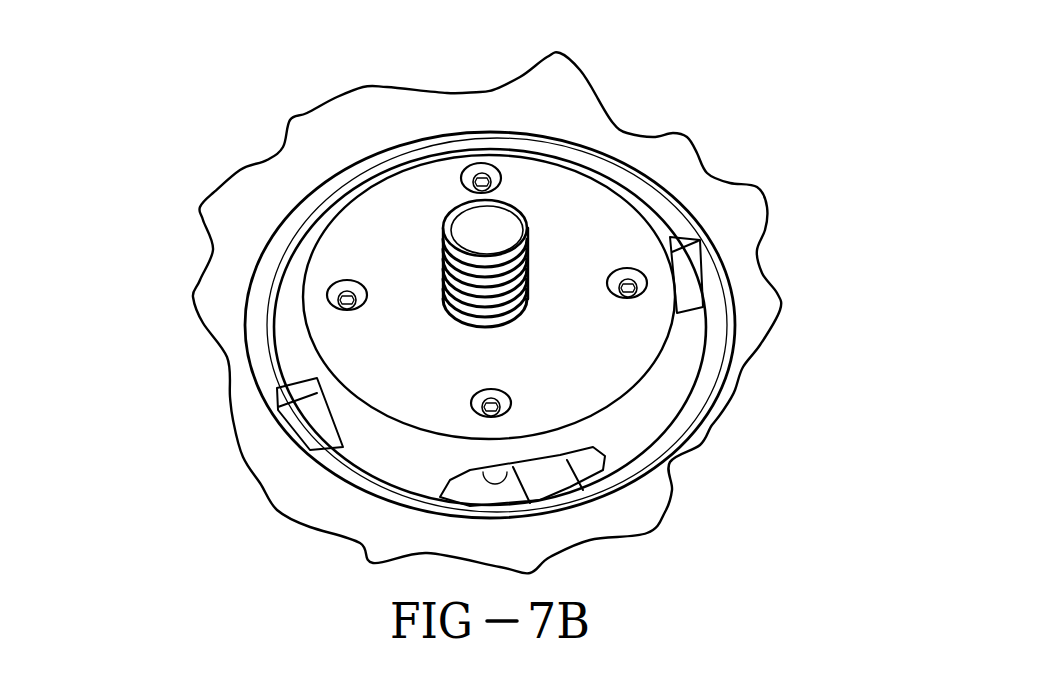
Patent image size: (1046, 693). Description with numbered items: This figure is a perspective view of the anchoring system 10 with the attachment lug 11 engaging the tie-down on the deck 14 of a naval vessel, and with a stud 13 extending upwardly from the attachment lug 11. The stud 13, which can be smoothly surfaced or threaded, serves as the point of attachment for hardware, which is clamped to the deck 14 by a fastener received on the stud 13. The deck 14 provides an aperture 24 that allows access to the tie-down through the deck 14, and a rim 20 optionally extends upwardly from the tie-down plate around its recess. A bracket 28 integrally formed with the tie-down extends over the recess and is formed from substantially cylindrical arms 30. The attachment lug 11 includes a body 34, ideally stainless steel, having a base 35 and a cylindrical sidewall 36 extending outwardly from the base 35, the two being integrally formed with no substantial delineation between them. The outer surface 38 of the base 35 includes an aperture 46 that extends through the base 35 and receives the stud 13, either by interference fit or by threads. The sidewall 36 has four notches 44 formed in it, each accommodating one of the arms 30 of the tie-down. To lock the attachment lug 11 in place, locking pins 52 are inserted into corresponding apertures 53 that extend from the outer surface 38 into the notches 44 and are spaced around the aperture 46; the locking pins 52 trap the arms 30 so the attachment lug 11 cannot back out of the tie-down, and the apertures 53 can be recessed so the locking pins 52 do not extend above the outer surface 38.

The anchoring system 10 is at (316, 64).
The attachment lug 11 is at (345, 249).
The stud 13 is at (495, 218).
The deck 14 is at (312, 520).
The rim 20 is at (713, 376).
The aperture 24 is at (665, 458).
The bracket 28 is at (549, 490).
The arms 30 is at (690, 262).
The body 34 is at (600, 148).
The base 35 is at (623, 210).
The sidewall 36 is at (655, 382).
The outer surface 38 is at (403, 237).
The notches 44 is at (329, 363).
The aperture 46 is at (497, 326).
The locking pins 52 is at (490, 166).
The apertures 53 is at (468, 164).